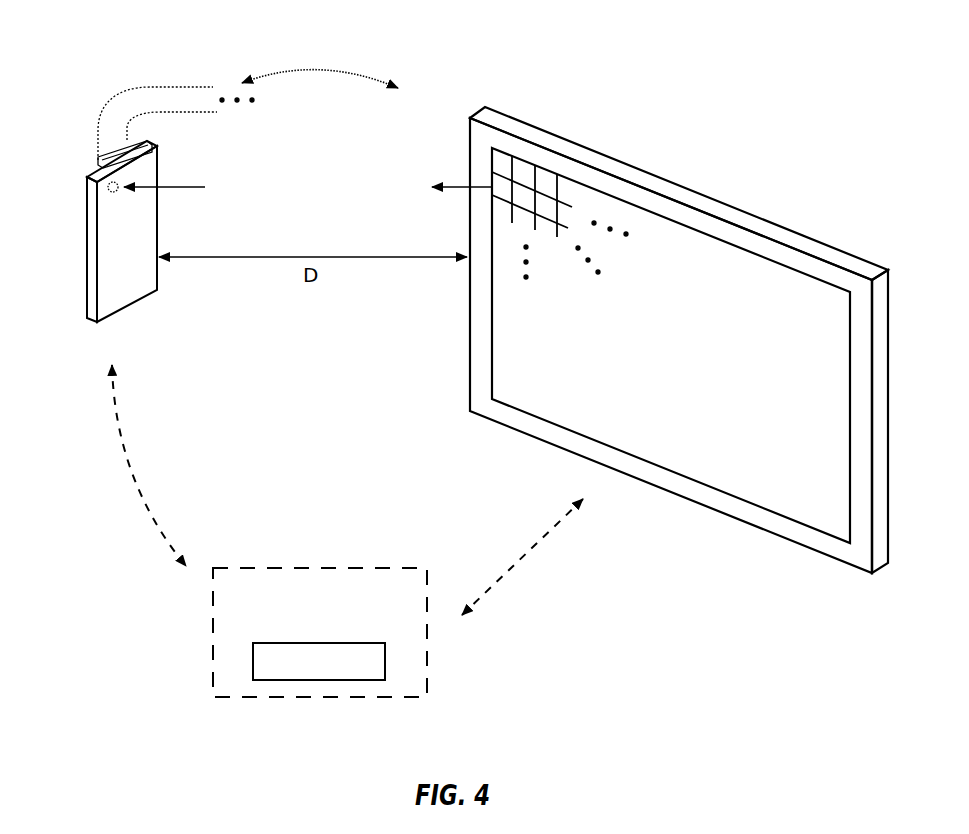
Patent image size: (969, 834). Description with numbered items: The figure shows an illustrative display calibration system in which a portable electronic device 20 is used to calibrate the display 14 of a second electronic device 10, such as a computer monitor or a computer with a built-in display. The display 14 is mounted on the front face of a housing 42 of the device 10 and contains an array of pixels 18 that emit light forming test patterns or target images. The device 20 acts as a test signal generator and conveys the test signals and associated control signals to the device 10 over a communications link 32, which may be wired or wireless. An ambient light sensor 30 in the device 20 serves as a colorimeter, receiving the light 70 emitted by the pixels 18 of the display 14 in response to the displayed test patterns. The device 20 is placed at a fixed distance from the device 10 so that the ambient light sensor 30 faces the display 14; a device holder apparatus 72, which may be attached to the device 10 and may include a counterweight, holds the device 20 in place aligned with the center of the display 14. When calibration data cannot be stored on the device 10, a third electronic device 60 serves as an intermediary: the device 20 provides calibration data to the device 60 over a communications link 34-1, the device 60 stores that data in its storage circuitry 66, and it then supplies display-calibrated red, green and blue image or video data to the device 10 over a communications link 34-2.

The electronic device 10 is at (703, 329).
The display 14 is at (828, 408).
The pixels 18 is at (503, 165).
The electronic device 20 is at (78, 321).
The ambient light sensor 30 is at (110, 192).
The communications link 32 is at (316, 70).
The communications link 34-1 is at (128, 472).
The communications link 34-2 is at (540, 560).
The housing 42 is at (868, 258).
The electronic device 60 is at (320, 568).
The storage circuitry 66 is at (253, 660).
The light 70 is at (186, 186).
The apparatus 72 is at (90, 165).